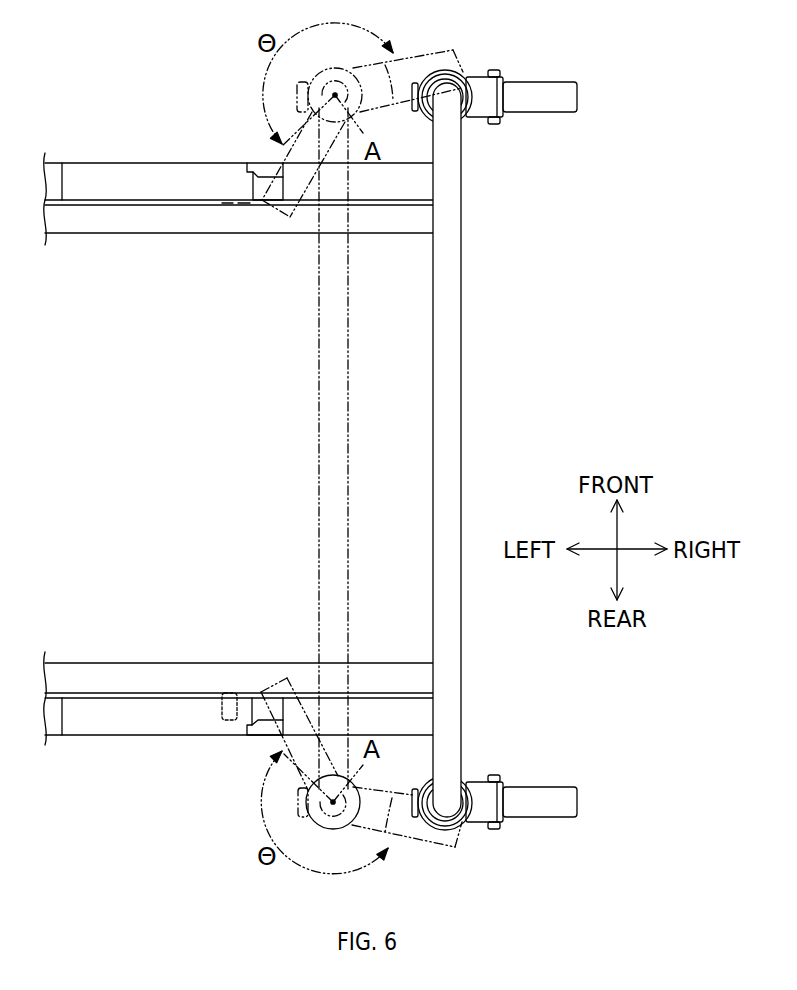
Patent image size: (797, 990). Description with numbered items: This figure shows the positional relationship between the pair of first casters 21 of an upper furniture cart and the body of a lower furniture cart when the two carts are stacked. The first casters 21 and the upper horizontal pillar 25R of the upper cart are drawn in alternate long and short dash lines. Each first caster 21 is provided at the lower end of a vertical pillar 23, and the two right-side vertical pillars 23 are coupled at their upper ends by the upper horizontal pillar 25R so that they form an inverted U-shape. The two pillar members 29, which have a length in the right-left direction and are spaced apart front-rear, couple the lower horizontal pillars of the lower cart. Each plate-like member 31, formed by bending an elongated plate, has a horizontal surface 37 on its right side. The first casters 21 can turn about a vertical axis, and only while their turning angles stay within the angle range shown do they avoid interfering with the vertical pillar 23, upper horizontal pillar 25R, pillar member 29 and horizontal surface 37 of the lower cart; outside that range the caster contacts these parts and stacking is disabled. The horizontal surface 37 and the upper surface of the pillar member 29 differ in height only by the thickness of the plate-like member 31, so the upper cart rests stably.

The first caster 21 is at (553, 90).
The vertical pillar 23 is at (470, 78).
The upper horizontal pillar 25R is at (327, 437).
The pillar member 29 is at (195, 224).
The plate-like member 31 is at (122, 176).
The horizontal surface 37 is at (398, 190).